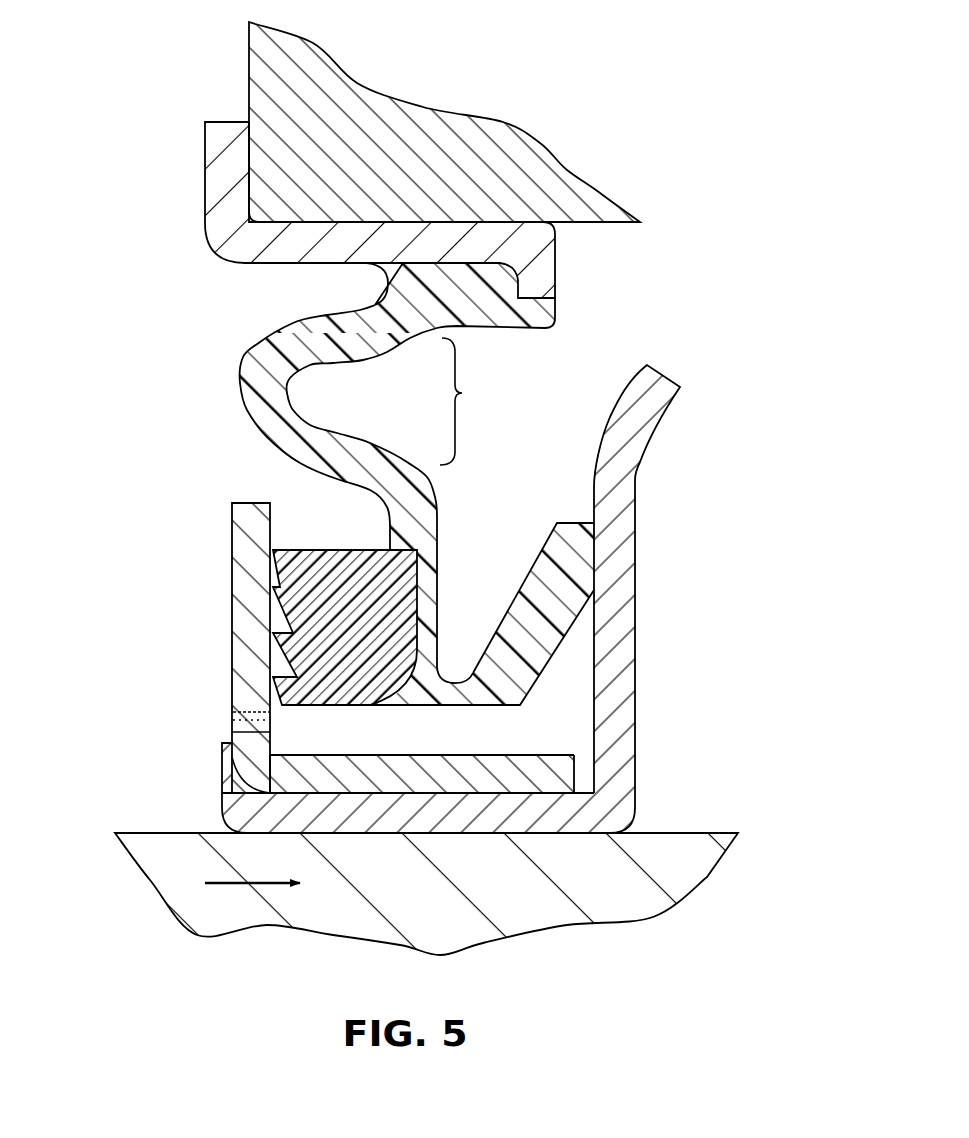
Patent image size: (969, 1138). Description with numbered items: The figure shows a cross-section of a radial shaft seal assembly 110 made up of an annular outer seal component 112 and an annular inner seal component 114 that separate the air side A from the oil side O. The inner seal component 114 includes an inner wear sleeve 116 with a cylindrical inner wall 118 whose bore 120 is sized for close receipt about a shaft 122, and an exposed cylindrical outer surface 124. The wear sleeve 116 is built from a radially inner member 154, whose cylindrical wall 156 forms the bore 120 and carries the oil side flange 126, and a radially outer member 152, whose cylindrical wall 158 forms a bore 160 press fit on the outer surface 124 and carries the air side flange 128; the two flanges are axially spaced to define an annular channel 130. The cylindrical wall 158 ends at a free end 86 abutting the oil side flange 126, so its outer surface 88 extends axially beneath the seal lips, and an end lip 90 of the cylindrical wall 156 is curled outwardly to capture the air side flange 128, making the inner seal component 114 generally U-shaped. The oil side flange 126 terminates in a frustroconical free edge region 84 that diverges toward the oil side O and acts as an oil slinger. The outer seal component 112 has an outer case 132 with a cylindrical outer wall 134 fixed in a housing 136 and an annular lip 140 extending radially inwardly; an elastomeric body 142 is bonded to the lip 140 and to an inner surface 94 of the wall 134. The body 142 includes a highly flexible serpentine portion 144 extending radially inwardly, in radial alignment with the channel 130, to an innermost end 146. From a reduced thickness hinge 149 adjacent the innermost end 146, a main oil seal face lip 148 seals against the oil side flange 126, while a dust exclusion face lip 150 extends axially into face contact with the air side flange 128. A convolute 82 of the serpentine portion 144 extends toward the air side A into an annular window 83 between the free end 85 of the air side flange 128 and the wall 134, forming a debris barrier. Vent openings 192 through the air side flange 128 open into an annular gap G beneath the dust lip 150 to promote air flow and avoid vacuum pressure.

The seal assembly 110 is at (626, 84).
The outer seal component 112 is at (688, 262).
The inner seal component 114 is at (710, 798).
The inner wear sleeve 116 is at (650, 749).
The cylindrical inner wall 118 is at (395, 833).
The bore 120 is at (545, 833).
The shaft 122 is at (683, 862).
The outer surface 124 is at (312, 773).
The oil side flange 126 is at (620, 568).
The air side flange 128 is at (242, 573).
The annular channel 130 is at (567, 678).
The outer case 132 is at (562, 240).
The cylindrical outer wall 134 is at (288, 258).
The housing 136 is at (425, 120).
The annular lip 140 is at (542, 278).
The elastomeric body 142 is at (478, 324).
The serpentine portion 144 is at (468, 401).
The innermost end 146 is at (393, 695).
The main oil seal face lip 148 is at (560, 542).
The hinge 149 is at (460, 684).
The dust exclusion face lip 150 is at (328, 703).
The radially outer member 152 is at (468, 750).
The radially inner member 154 is at (448, 836).
The cylindrical wall 156 is at (360, 833).
The cylindrical wall 158 is at (397, 760).
The bore 160 is at (550, 797).
The vent openings 192 is at (250, 727).
The convolute 82 is at (248, 363).
The annular window 83 is at (250, 463).
The frustroconical free edge region 84 is at (580, 445).
The free end 85 is at (252, 503).
The free end 86 is at (575, 773).
The outer surface 88 is at (488, 751).
The end lip 90 is at (222, 773).
The inner surface 94 is at (323, 268).
The annular gap G is at (312, 742).
The air side A is at (84, 395).
The oil side O is at (725, 392).